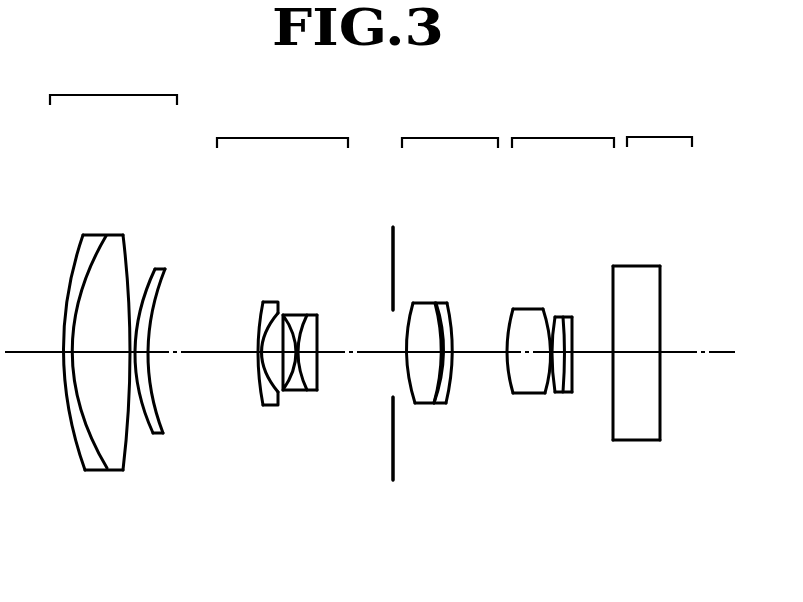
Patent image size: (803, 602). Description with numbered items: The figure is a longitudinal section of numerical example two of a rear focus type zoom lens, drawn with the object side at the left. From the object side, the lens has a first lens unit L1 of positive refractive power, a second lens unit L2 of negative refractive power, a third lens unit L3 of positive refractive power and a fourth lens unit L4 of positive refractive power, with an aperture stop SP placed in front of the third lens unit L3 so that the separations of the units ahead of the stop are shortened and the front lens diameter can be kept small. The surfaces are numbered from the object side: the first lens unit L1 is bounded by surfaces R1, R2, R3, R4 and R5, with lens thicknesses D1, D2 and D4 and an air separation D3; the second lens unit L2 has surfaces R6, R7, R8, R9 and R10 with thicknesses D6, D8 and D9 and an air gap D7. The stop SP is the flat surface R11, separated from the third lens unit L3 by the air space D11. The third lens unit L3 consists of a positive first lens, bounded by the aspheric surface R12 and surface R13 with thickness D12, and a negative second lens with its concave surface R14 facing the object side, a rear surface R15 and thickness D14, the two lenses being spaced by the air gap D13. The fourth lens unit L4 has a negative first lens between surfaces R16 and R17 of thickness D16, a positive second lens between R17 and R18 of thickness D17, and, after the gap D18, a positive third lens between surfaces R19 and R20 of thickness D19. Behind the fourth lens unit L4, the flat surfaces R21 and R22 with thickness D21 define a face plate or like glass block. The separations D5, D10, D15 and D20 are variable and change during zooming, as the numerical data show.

The first lens unit L1 is at (113, 265).
The second lens unit L2 is at (282, 257).
The third lens unit L3 is at (450, 255).
The fourth lens unit L4 is at (563, 250).
The stop SP is at (380, 301).
The first lens surface R1 is at (68, 305).
The second lens surface R2 is at (89, 288).
The third lens surface R3 is at (116, 305).
The fourth lens surface R4 is at (141, 271).
The fifth lens surface R5 is at (162, 287).
The sixth lens surface R6 is at (240, 296).
The seventh lens surface R7 is at (261, 271).
The eighth lens surface R8 is at (283, 288).
The ninth lens surface R9 is at (307, 270).
The tenth lens surface R10 is at (331, 288).
The stop surface R11 is at (380, 317).
The twelfth lens surface R12 is at (418, 295).
The thirteenth lens surface R13 is at (437, 277).
The fourteenth lens surface R14 is at (455, 295).
The fifteenth lens surface R15 is at (472, 277).
The sixteenth lens surface R16 is at (523, 290).
The seventeenth lens surface R17 is at (541, 272).
The eighteenth lens surface R18 is at (567, 289).
The nineteenth lens surface R19 is at (579, 274).
The twentieth lens surface R20 is at (599, 289).
The glass block front surface R21 is at (631, 298).
The glass block rear surface R22 is at (667, 313).
The first lens thickness D1 is at (64, 487).
The second lens thickness D2 is at (99, 469).
The third air separation D3 is at (140, 475).
The fourth lens thickness D4 is at (176, 477).
The fifth air separation D5 is at (211, 412).
The sixth lens thickness D6 is at (252, 451).
The seventh air separation D7 is at (285, 452).
The eighth lens thickness D8 is at (314, 456).
The ninth lens thickness D9 is at (338, 458).
The tenth air separation D10 is at (363, 413).
The eleventh air separation D11 is at (405, 443).
The twelfth lens thickness D12 is at (426, 472).
The thirteenth air separation D13 is at (444, 494).
The fourteenth lens thickness D14 is at (457, 456).
The fifteenth air separation D15 is at (481, 473).
The sixteenth lens thickness D16 is at (503, 458).
The seventeenth lens thickness D17 is at (530, 473).
The eighteenth air separation D18 is at (551, 459).
The nineteenth lens thickness D19 is at (576, 475).
The twentieth air separation D20 is at (610, 464).
The glass block thickness D21 is at (649, 499).